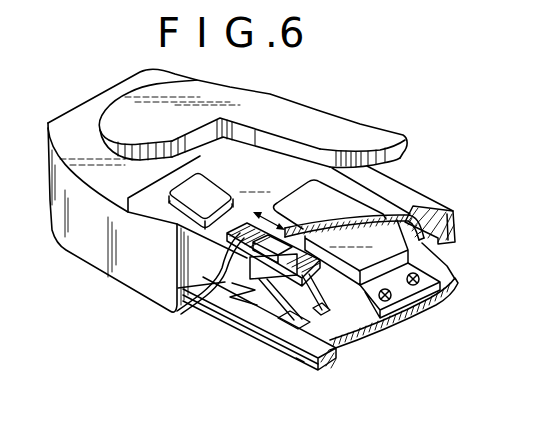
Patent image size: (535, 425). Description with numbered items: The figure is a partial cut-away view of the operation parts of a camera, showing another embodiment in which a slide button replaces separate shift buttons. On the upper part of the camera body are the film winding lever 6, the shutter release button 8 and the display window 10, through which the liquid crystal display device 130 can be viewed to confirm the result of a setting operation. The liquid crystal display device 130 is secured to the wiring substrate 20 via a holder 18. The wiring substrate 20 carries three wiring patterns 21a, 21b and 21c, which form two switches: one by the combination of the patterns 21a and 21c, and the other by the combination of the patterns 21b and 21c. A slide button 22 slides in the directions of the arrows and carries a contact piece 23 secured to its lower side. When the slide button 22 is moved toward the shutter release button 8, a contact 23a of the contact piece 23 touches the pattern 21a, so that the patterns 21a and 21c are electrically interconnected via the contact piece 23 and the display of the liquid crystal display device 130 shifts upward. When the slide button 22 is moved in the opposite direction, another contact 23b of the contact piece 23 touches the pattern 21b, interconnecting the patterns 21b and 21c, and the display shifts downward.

The film winding lever 6 is at (351, 127).
The shutter release button 8 is at (214, 188).
The display window 10 is at (327, 195).
The liquid crystal display device 130 is at (421, 211).
The holder 18 is at (440, 270).
The wiring substrate 20 is at (379, 335).
The wiring pattern 21a is at (282, 318).
The wiring pattern 21b is at (233, 298).
The wiring pattern 21c is at (273, 293).
The slide button 22 is at (228, 247).
The contact piece 23 is at (270, 293).
The contact 23a is at (299, 362).
The contact 23b is at (178, 288).